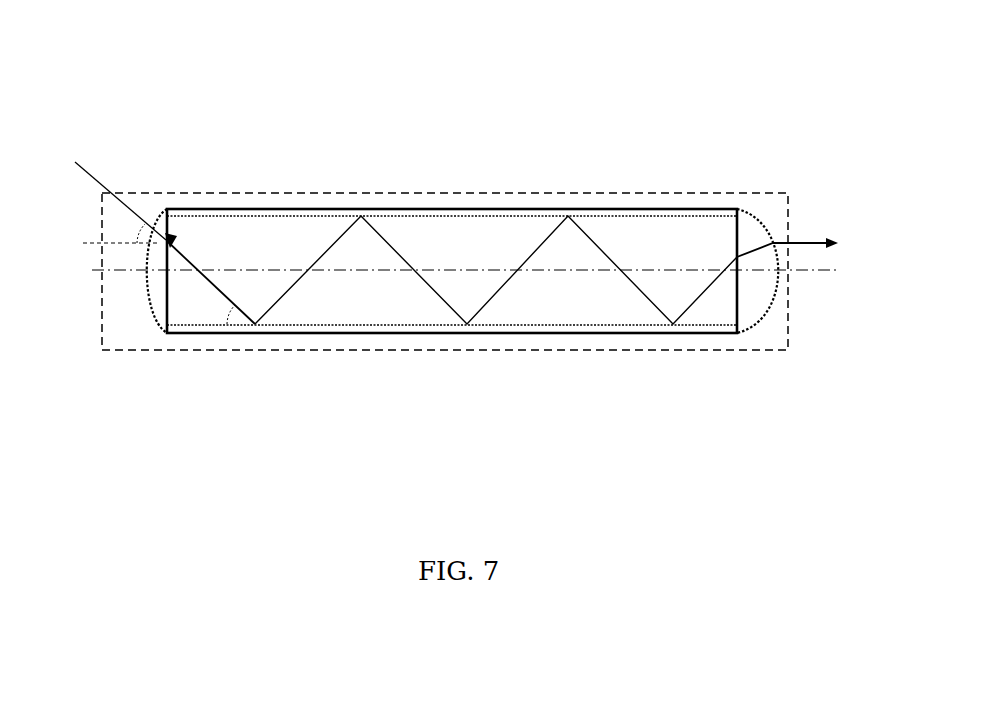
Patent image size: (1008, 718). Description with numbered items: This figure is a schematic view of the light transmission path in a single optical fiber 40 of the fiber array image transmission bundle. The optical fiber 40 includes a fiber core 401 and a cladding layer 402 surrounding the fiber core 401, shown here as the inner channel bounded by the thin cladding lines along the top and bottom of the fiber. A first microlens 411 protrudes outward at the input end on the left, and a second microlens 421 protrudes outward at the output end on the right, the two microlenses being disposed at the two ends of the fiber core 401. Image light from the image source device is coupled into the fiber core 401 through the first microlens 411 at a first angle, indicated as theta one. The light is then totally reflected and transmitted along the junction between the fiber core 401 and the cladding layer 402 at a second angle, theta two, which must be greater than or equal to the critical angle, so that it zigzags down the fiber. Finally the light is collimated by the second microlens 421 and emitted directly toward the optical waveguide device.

The optical fiber 40 is at (238, 108).
The fiber core 401 is at (492, 237).
The cladding layer 402 is at (308, 209).
The first microlens 411 is at (157, 290).
The second microlens 421 is at (755, 222).